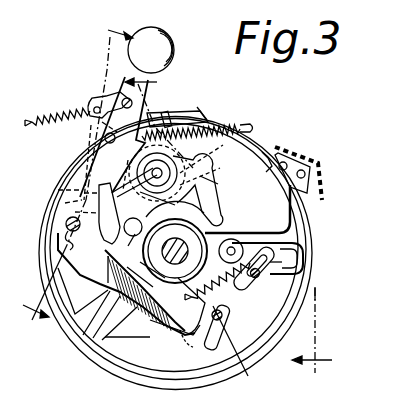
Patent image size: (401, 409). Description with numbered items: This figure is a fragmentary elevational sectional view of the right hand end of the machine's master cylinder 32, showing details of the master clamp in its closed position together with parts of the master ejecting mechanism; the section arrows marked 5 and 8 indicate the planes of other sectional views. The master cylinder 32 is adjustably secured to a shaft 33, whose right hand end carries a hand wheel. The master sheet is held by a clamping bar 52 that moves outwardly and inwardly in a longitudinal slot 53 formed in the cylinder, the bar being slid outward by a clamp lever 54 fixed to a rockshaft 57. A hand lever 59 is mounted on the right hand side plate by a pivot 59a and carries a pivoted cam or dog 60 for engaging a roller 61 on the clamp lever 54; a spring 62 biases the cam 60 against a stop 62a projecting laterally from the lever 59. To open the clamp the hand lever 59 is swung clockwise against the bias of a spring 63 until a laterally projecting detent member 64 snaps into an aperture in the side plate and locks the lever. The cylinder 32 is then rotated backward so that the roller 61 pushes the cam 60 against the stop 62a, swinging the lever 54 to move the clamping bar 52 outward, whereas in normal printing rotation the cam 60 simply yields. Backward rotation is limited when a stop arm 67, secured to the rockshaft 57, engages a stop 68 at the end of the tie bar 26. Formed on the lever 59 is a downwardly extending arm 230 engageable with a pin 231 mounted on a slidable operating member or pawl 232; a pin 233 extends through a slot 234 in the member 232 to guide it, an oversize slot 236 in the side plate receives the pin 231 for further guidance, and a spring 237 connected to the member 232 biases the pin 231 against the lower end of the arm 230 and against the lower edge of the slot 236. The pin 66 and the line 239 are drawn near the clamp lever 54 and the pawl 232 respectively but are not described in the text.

The section line 5- 5 is at (77, 182).
The section line 8- 8 is at (234, 225).
The tie bar 26 is at (302, 160).
The master cylinder 32 is at (310, 220).
The shaft 33 is at (183, 258).
The clamping bar 52 is at (200, 112).
The longitudinal slot 53 is at (176, 106).
The clamp lever 54 is at (218, 184).
The rockshaft 57 is at (174, 192).
The hand lever 59 is at (170, 42).
The pivot 59a is at (79, 236).
The cam 60 is at (118, 168).
The roller 61 is at (122, 247).
The spring 62 is at (246, 125).
The stop 62a is at (58, 193).
The spring 63 is at (55, 118).
The detent member 64 is at (118, 101).
The pin 66 is at (134, 225).
The stop arm 67 is at (212, 163).
The stop 68 is at (266, 158).
The arm 230 is at (167, 327).
The pin 231 is at (224, 322).
The slidable operating member 232 is at (298, 258).
The pin 233 is at (315, 298).
The slot 234 is at (270, 272).
The oversize slot 236 is at (193, 348).
The spring 237 is at (238, 298).
The link rod 239 is at (243, 345).